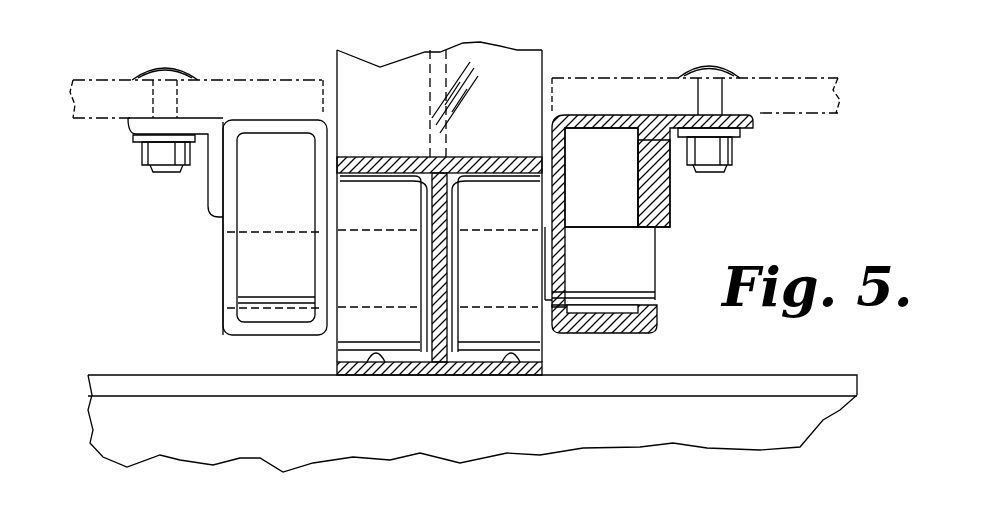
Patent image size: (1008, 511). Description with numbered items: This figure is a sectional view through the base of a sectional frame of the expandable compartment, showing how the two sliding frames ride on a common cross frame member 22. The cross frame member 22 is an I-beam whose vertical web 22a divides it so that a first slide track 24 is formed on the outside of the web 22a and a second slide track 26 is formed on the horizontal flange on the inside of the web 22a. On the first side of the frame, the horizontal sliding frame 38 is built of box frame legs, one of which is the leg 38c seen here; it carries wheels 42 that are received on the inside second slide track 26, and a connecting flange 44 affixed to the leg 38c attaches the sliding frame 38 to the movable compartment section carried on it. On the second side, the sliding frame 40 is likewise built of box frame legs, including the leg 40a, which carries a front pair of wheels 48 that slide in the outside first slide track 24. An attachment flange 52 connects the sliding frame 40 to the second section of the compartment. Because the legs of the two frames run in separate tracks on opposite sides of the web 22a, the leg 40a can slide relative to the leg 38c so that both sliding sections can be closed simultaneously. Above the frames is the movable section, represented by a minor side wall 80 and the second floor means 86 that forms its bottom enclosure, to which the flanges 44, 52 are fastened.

The cross frame member 22 is at (462, 377).
The web 22a is at (438, 342).
The first slide track 24 is at (367, 352).
The second slide track 26 is at (515, 352).
The horizontal sliding frame 38 is at (647, 330).
The leg 38c is at (650, 212).
The sliding frame 40 is at (225, 327).
The leg 40a is at (223, 227).
The wheels 42 is at (503, 215).
The connecting flanges 44 is at (680, 117).
The front pair of wheels 48 is at (387, 215).
The attachment flanges 52 is at (203, 128).
The minor side wall 80 is at (428, 0).
The second floor means 86 is at (108, 80).